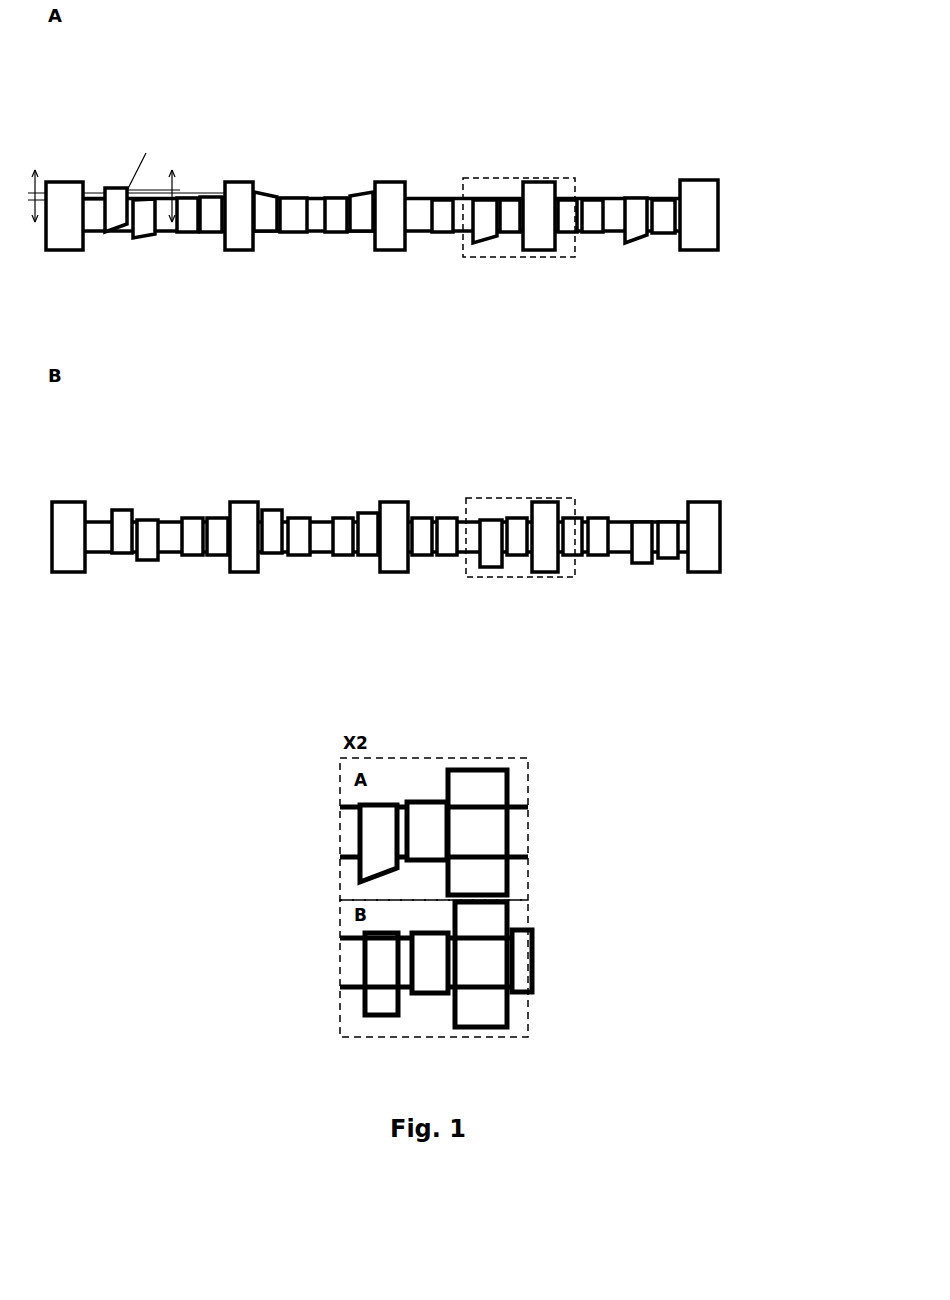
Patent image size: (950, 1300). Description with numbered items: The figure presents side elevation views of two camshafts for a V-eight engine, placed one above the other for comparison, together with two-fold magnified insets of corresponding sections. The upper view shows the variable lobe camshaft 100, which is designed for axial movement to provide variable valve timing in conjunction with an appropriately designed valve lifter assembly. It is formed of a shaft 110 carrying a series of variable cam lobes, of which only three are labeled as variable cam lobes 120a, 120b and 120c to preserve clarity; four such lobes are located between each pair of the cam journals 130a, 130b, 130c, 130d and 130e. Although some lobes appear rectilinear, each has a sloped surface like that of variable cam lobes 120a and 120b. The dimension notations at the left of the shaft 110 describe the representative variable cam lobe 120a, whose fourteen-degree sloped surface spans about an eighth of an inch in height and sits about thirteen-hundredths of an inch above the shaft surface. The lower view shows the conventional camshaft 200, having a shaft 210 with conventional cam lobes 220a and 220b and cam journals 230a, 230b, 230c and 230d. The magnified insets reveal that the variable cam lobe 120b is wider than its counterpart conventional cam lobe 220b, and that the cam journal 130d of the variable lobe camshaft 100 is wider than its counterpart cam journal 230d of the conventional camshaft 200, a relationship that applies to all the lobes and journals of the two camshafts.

The variable lobe camshaft 100 is at (362, 128).
The shaft 110 is at (89, 196).
The variable cam lobe 120a is at (120, 217).
The variable cam lobe 120b is at (486, 226).
The variable cam lobe 120c is at (417, 218).
The cam journal 130a is at (60, 238).
The cam journal 130b is at (239, 192).
The cam journal 130c is at (389, 192).
The cam journal 130d is at (539, 192).
The cam journal 130e is at (697, 192).
The conventional camshaft 200 is at (447, 468).
The shaft 210 is at (100, 528).
The conventional cam lobe 220a is at (123, 550).
The conventional cam lobe 220b is at (497, 557).
The cam journal 230a is at (75, 557).
The cam journal 230b is at (247, 552).
The cam journal 230c is at (395, 557).
The cam journal 230d is at (547, 557).